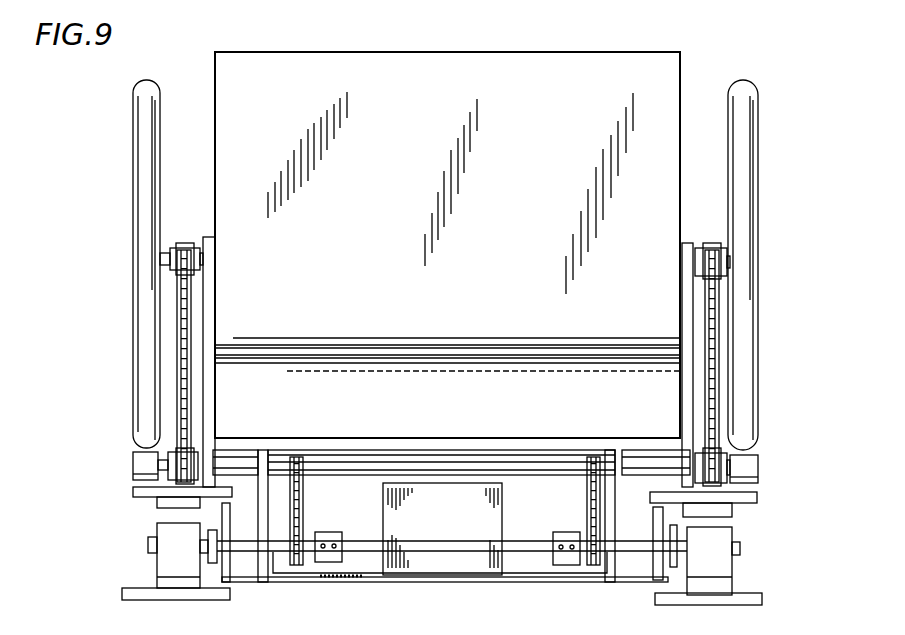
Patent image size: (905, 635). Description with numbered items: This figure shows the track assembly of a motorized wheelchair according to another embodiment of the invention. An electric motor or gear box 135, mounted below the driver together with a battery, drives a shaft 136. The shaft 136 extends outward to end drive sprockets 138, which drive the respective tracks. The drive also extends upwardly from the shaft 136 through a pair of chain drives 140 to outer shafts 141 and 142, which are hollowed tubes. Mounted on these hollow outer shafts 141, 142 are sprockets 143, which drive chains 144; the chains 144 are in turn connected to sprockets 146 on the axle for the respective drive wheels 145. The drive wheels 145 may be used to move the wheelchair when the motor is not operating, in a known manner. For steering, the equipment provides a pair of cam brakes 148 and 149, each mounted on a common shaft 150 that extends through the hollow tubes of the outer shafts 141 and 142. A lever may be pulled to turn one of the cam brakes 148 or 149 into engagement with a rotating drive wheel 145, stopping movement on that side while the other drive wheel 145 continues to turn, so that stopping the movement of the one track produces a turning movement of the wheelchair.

The electric motor or gear box 135 is at (447, 562).
The shaft 136 is at (372, 560).
The end drive sprockets 138 is at (167, 557).
The chain drives 140 is at (303, 498).
The outer shaft 141 is at (635, 463).
The outer shaft 142 is at (240, 462).
The sprockets 143 is at (212, 432).
The chains 144 is at (200, 340).
The drive wheels 145 is at (146, 121).
The sprockets 146 is at (197, 265).
The cam brake 148 is at (143, 453).
The cam brake 149 is at (760, 470).
The common shaft 150 is at (437, 463).